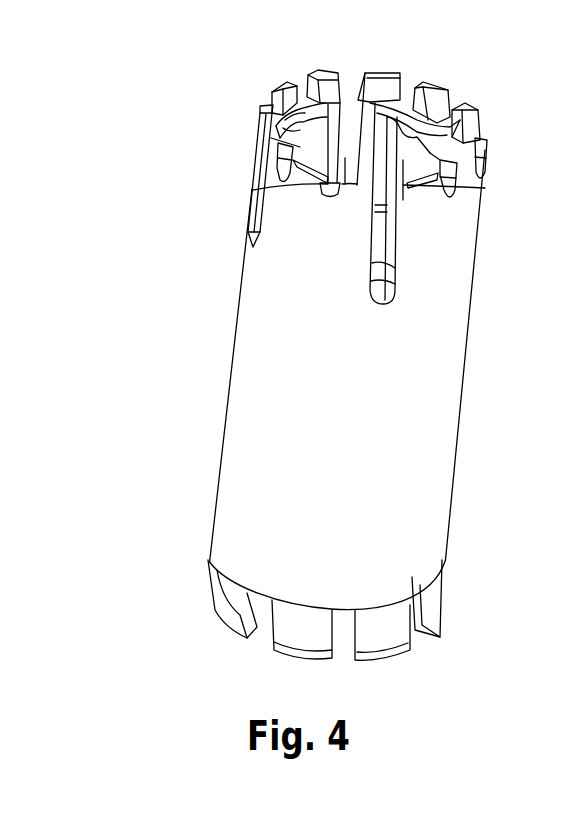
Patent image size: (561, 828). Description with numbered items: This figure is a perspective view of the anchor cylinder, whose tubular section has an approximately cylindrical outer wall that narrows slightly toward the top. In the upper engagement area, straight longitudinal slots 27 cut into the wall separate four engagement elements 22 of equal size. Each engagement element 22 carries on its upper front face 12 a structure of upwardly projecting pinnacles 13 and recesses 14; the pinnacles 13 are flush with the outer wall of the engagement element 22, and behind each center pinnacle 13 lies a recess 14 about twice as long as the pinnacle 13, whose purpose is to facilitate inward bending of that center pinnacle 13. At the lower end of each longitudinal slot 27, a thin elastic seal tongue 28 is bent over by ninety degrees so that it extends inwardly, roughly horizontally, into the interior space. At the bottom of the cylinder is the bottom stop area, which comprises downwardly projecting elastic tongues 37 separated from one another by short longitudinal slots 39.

The upper front face 12 is at (297, 138).
The pinnacle 13 is at (283, 88).
The recess 14 is at (298, 120).
The engagement element 22 is at (307, 214).
The longitudinal slot 27 is at (395, 233).
The elastic seal tongue 28 is at (382, 283).
The elastic tongue 37 is at (233, 598).
The short longitudinal slot 39 is at (263, 622).